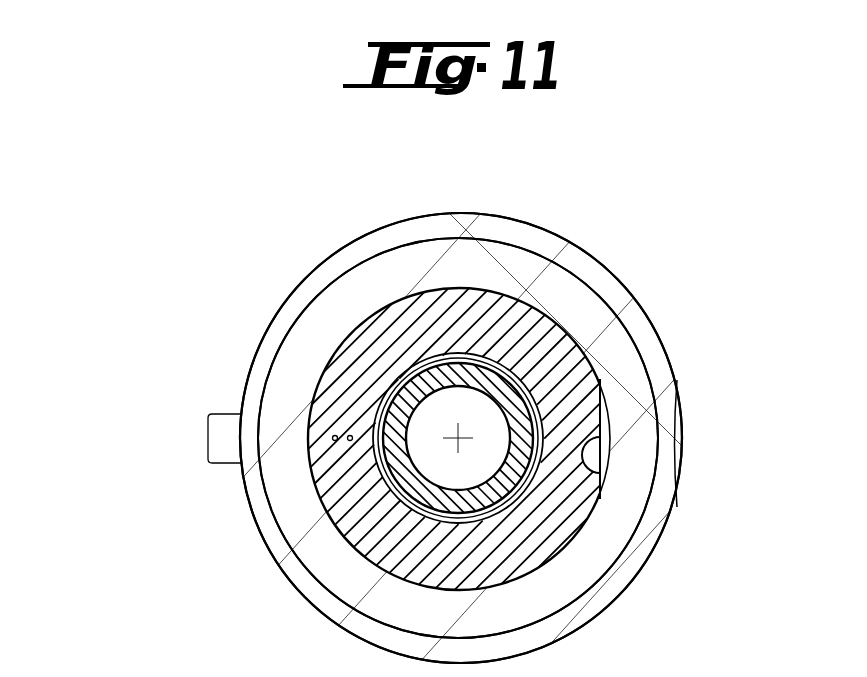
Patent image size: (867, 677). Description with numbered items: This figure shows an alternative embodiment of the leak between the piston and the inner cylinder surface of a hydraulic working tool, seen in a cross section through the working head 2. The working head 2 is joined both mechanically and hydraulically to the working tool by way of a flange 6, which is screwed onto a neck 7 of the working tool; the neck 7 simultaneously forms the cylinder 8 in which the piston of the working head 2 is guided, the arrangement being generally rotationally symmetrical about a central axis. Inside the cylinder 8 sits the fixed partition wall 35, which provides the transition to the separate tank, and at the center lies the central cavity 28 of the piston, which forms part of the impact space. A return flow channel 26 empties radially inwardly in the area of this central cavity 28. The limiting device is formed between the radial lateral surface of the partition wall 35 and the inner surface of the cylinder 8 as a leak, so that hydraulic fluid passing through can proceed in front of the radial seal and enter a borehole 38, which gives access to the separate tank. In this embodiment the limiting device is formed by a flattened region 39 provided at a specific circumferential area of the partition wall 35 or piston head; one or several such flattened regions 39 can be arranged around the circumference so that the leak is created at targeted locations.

The working head 2 is at (192, 326).
The flange 6 is at (606, 284).
The neck 7 is at (547, 278).
The cylinder 8 is at (463, 436).
The return flow channel 26 is at (349, 436).
The central cavity 28 is at (485, 415).
The partition wall 35 is at (373, 337).
The borehole 38 is at (333, 437).
The flattened region 39 is at (586, 453).